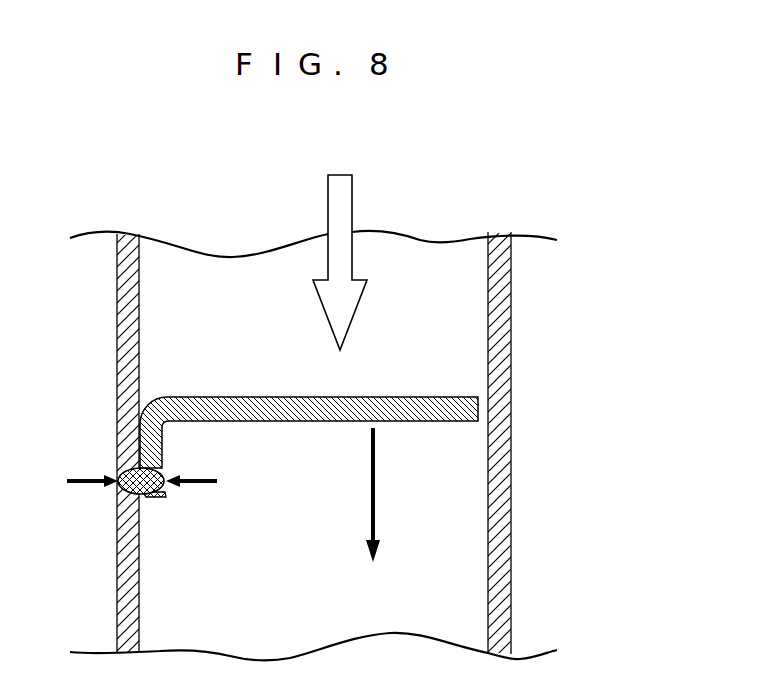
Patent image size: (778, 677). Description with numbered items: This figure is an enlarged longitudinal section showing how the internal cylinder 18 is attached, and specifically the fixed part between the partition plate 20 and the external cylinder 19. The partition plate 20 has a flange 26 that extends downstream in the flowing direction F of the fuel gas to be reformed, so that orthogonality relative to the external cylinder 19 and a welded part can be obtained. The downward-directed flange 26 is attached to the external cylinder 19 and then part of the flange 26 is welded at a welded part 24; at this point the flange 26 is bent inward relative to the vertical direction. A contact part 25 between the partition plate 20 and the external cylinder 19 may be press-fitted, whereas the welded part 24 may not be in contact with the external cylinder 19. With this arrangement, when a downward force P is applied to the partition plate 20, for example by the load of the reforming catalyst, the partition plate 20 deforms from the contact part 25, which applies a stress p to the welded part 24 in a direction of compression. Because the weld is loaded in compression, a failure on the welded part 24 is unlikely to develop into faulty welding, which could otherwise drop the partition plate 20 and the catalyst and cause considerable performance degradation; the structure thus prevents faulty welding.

The internal cylinder 18 is at (497, 333).
The external cylinder 19 is at (128, 324).
The partition plate 20 is at (313, 402).
The welded part 24 is at (120, 490).
The contact part 25 is at (143, 433).
The flange 26 is at (143, 460).
The flowing direction F is at (339, 217).
The downward force P is at (374, 510).
The stress p is at (151, 480).